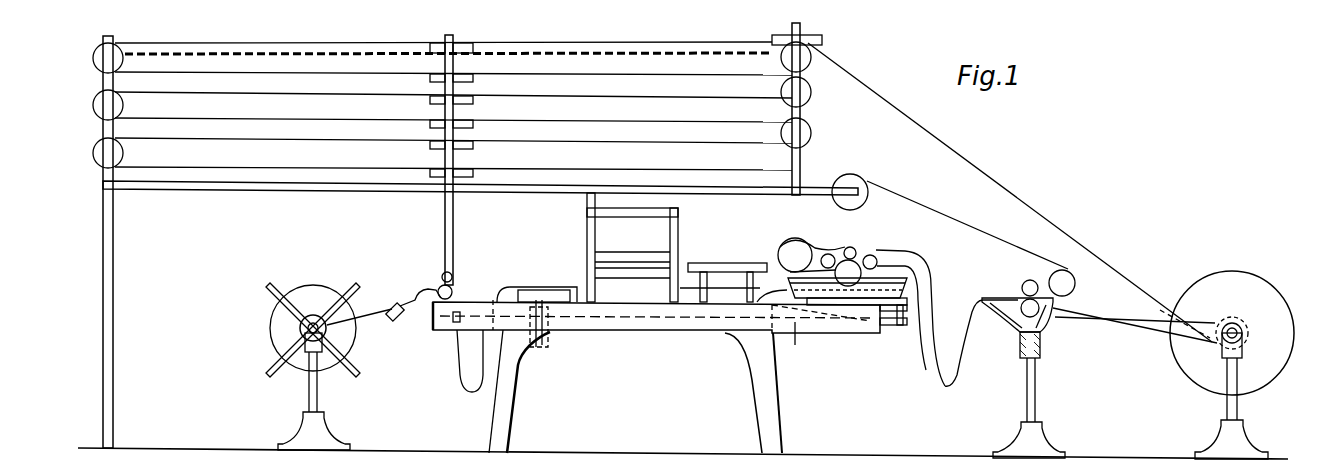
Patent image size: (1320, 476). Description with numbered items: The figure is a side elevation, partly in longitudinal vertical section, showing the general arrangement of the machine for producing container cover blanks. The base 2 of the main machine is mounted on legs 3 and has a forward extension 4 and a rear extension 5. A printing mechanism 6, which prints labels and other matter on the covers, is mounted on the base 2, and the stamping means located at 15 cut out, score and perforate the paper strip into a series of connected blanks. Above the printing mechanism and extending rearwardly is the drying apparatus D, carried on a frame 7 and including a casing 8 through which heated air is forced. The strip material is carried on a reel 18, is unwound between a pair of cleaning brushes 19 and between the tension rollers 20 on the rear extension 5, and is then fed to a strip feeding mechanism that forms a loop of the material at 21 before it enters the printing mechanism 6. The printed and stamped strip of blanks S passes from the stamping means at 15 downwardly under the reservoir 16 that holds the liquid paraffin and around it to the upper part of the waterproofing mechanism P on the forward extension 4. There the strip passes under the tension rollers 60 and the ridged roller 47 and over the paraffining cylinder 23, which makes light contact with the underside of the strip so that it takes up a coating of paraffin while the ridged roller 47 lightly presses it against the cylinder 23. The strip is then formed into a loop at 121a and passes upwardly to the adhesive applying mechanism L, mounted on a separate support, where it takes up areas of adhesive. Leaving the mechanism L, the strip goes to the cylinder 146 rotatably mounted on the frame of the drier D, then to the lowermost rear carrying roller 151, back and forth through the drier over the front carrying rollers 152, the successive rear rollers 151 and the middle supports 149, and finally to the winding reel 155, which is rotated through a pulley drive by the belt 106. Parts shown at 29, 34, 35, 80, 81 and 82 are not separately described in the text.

The base 2 is at (657, 331).
The legs 3 is at (516, 385).
The forward extension 4 is at (835, 334).
The rear extension 5 is at (440, 331).
The printing mechanism 6 is at (632, 247).
The frame 7 is at (113, 243).
The casing 8 is at (242, 50).
The stamping means 15 is at (723, 273).
The reservoir or tank 16 is at (832, 294).
The reel 18 is at (316, 387).
The cleaning brushes 19 is at (394, 300).
The tension rollers 20 is at (461, 281).
The loop 21 is at (462, 363).
The paraffining cylinder 23 is at (860, 262).
The rod 29 is at (792, 340).
The guide block 34 is at (547, 303).
The bracket 35 is at (547, 328).
The ridged roller 47 is at (853, 249).
The tension rollers 60 is at (825, 256).
The stand base 80 is at (1040, 441).
The stand column 81 is at (1036, 396).
The stand head 82 is at (1045, 333).
The belt 106 is at (1147, 326).
The loop 121a is at (964, 351).
The cylinder 146 is at (858, 180).
The middle supports 149 is at (472, 173).
The rear carrying rollers 151 is at (123, 152).
The front carrying rollers 152 is at (782, 133).
The final winding reel 155 is at (1222, 283).
The drying apparatus D is at (480, 197).
The waterproofing mechanism P is at (811, 249).
The strip of blanks S is at (910, 309).
The adhesive applying mechanism L is at (1035, 293).